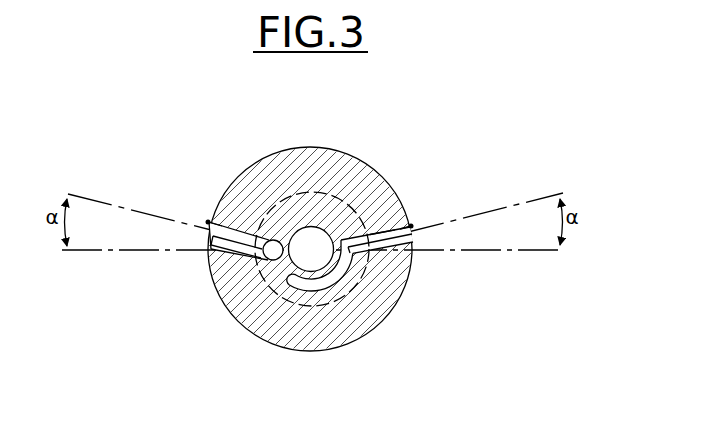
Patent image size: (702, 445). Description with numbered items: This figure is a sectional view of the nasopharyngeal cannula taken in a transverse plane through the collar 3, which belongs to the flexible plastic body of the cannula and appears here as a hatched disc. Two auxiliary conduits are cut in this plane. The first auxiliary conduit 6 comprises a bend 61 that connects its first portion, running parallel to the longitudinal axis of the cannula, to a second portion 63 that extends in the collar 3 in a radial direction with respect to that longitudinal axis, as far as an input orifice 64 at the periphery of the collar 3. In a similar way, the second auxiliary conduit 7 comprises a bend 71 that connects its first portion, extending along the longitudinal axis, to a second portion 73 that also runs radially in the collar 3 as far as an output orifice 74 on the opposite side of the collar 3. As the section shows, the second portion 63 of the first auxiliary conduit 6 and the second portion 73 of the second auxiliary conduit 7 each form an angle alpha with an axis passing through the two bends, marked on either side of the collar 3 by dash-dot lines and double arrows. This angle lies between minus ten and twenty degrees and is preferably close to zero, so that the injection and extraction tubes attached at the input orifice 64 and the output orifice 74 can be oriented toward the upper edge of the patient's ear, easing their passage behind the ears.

The collar 3 is at (325, 352).
The first auxiliary conduit 6 is at (247, 256).
The bend 61 is at (291, 288).
The second portion 63 is at (211, 247).
The input orifice 64 is at (208, 222).
The second auxiliary conduit 7 is at (407, 245).
The bend 71 is at (341, 238).
The second portion 73 is at (380, 232).
The output orifice 74 is at (411, 226).